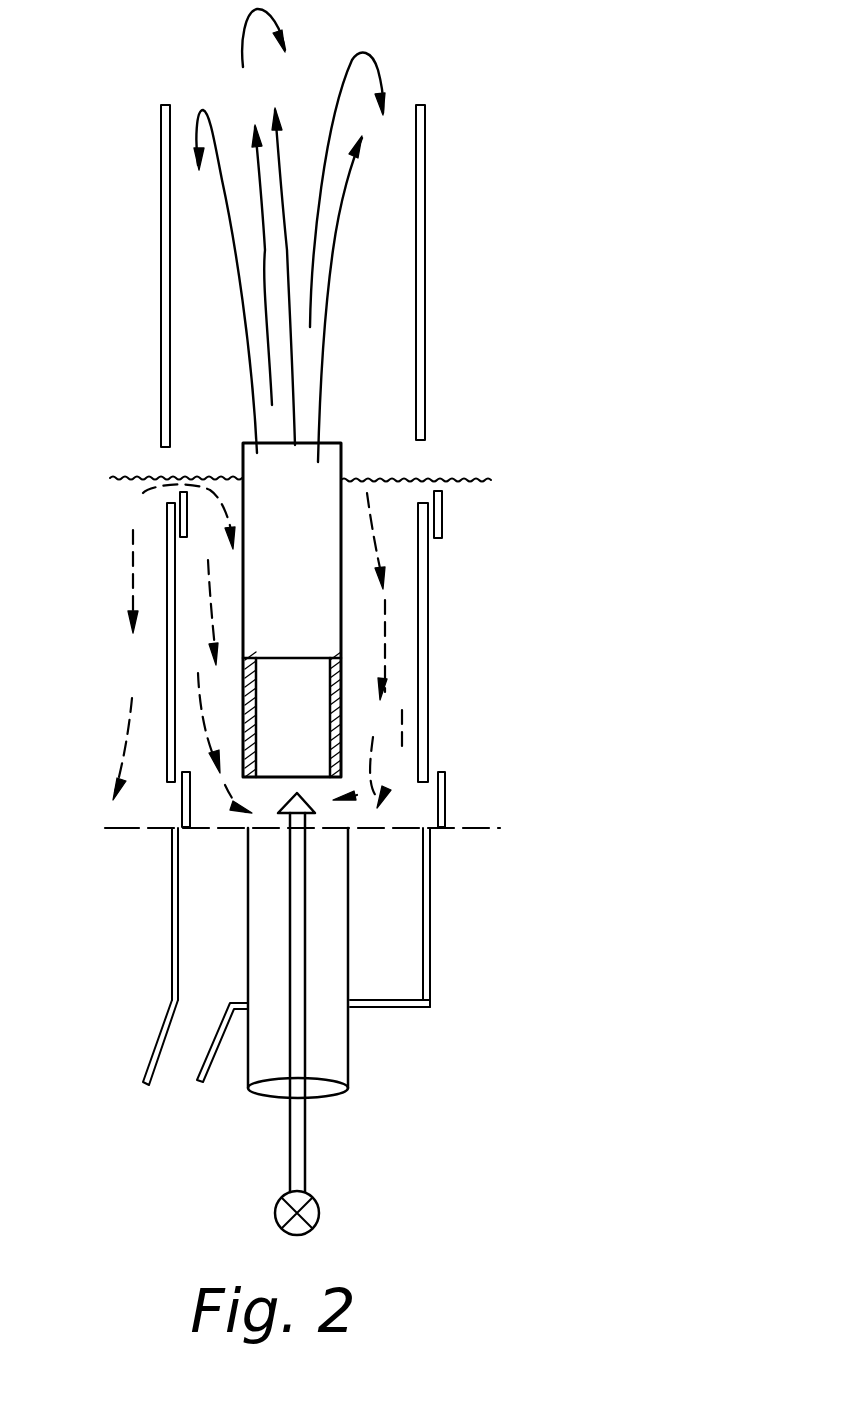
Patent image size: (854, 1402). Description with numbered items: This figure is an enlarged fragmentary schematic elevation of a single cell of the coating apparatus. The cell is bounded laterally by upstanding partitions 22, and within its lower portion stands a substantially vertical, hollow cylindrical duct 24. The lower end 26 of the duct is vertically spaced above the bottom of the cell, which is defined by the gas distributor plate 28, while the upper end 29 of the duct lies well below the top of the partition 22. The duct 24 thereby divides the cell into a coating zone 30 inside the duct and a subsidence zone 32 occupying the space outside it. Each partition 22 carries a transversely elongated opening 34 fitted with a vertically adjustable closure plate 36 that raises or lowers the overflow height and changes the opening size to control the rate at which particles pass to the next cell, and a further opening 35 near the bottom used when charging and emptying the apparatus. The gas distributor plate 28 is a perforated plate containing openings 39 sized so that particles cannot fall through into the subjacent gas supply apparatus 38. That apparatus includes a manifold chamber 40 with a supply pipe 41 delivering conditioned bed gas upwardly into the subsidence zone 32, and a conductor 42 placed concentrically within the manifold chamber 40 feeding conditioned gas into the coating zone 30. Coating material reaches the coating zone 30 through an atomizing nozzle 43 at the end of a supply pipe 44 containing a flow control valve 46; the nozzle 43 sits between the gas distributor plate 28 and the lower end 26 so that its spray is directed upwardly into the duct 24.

The partition 22 is at (161, 290).
The duct 24 is at (330, 457).
The lower end of duct 26 is at (268, 785).
The gas distributor plate 28 is at (105, 828).
The upper end of duct 29 is at (267, 443).
The coating zone 30 is at (287, 670).
The subsidence zone 32 is at (393, 610).
The opening 34 is at (418, 453).
The opening 35 is at (446, 802).
The closure plate 36 is at (443, 517).
The gas supply apparatus 38 is at (433, 918).
The openings 39 is at (120, 832).
The manifold chamber 40 is at (410, 1007).
The supply pipe 41 is at (157, 1052).
The conductor 42 is at (352, 1065).
The atomizing nozzle 43 is at (310, 798).
The supply pipe 44 is at (305, 1138).
The flow control valve 46 is at (273, 1203).